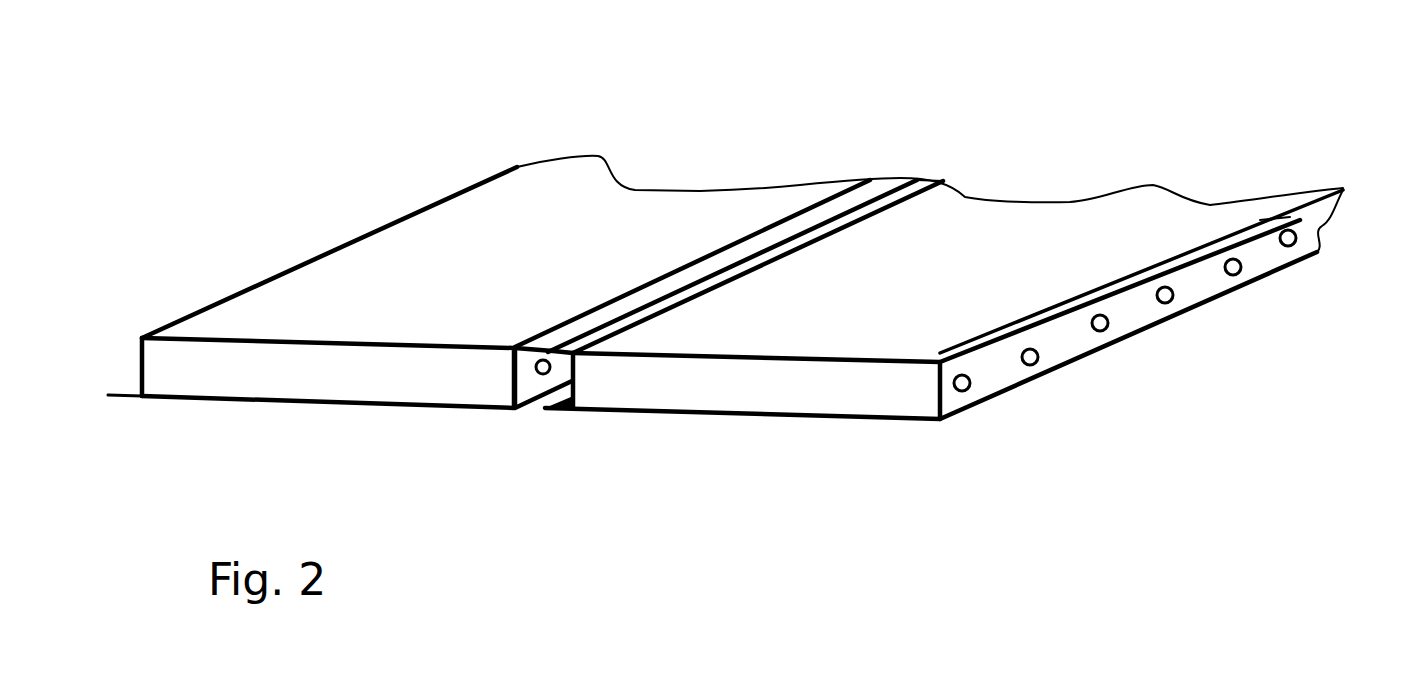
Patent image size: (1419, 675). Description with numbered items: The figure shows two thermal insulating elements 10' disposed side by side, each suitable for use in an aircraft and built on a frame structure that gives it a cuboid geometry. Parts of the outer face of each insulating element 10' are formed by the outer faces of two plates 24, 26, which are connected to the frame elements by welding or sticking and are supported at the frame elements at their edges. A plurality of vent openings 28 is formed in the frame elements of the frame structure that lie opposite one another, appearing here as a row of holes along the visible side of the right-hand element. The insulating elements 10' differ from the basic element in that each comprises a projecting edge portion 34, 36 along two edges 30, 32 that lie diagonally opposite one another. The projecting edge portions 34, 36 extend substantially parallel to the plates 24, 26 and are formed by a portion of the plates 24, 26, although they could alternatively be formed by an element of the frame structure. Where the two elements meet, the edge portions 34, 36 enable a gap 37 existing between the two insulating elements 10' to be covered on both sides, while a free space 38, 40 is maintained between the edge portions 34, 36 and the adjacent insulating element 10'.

The insulating element 10' is at (930, 134).
The plate 24 is at (418, 238).
The plate 26 is at (313, 404).
The vent openings 28 is at (543, 378).
The edge 30 is at (633, 290).
The edge 32 is at (140, 398).
The projecting edge portion 34 is at (773, 232).
The projecting edge portion 36 is at (117, 390).
The gap 37 is at (524, 383).
The free space 38 is at (525, 410).
The free space 40 is at (923, 183).